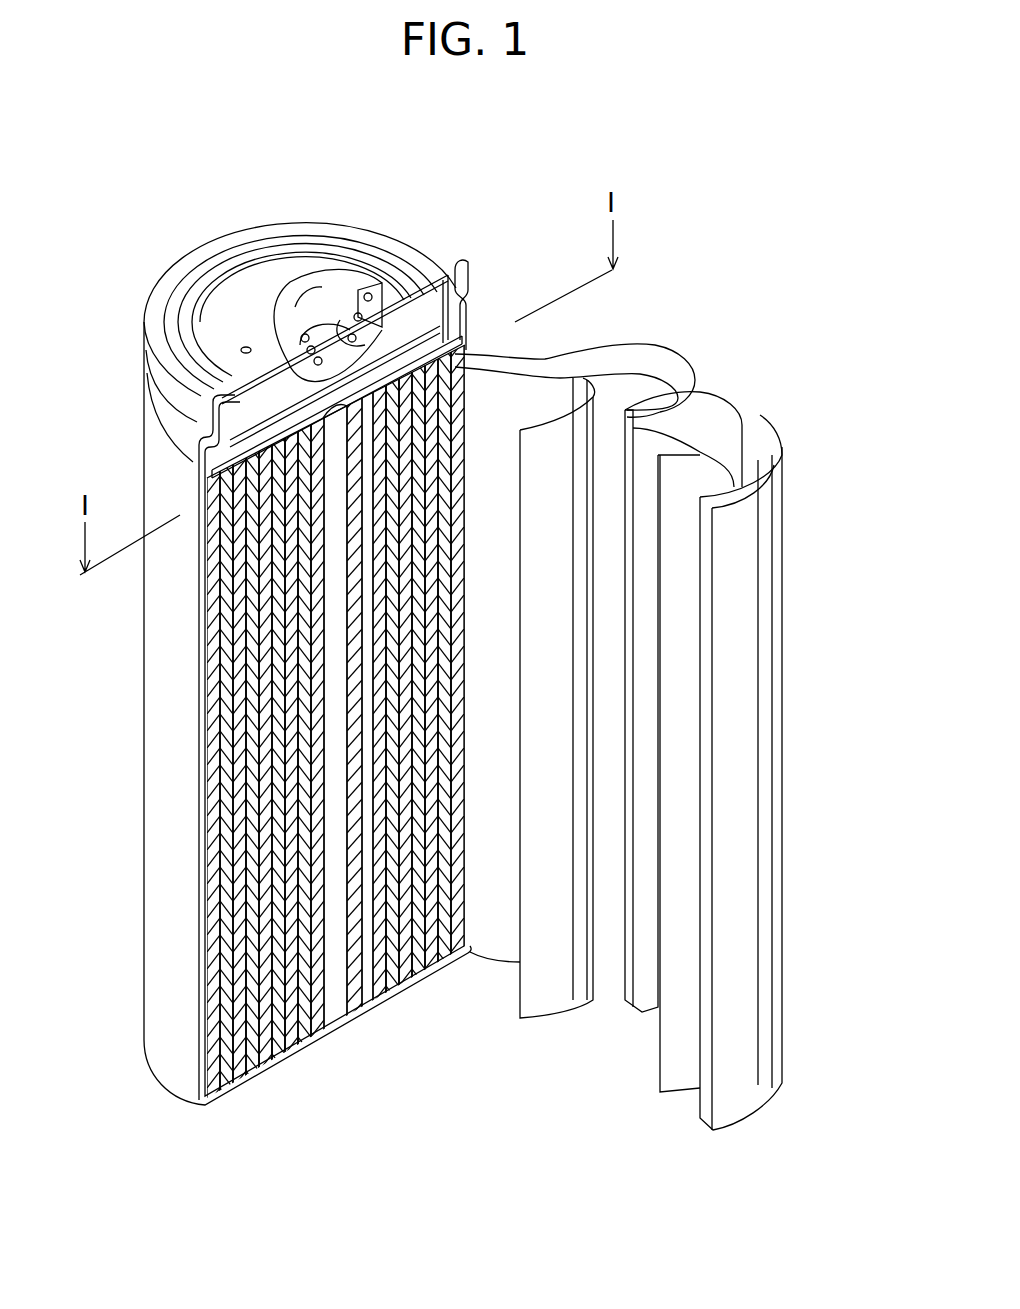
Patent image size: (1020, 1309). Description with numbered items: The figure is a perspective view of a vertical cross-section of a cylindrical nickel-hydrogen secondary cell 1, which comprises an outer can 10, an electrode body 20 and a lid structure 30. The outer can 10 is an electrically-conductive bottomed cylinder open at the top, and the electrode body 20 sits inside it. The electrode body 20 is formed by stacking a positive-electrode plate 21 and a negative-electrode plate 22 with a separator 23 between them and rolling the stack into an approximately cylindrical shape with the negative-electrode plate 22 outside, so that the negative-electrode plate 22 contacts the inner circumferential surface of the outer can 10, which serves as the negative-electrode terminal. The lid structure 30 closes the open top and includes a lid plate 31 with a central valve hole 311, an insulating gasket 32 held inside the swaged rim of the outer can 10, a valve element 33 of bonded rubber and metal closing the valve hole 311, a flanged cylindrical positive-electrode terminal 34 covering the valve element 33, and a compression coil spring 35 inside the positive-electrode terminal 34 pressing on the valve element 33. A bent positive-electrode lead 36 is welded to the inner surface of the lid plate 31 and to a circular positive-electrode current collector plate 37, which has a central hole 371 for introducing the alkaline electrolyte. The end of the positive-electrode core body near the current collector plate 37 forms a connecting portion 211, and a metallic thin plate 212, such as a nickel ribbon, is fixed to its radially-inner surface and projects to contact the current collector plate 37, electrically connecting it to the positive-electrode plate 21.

The nickel-hydrogen secondary cell 1 is at (662, 205).
The outer can 10 is at (197, 605).
The electrode body 20 is at (335, 1022).
The positive-electrode plate 21 is at (690, 430).
The connecting portion 211 is at (633, 440).
The metallic thin plate 212 is at (665, 347).
The negative-electrode plate 22 is at (765, 700).
The separator 23 is at (603, 378).
The lid structure 30 is at (300, 270).
The lid plate 31 is at (197, 403).
The valve hole 311 is at (290, 360).
The insulating gasket 32 is at (456, 282).
The valve element 33 is at (352, 295).
The positive-electrode terminal 34 is at (288, 295).
The compression coil spring 35 is at (336, 300).
The positive-electrode lead 36 is at (385, 305).
The positive-electrode current collector plate 37 is at (465, 332).
The hole 371 is at (217, 452).